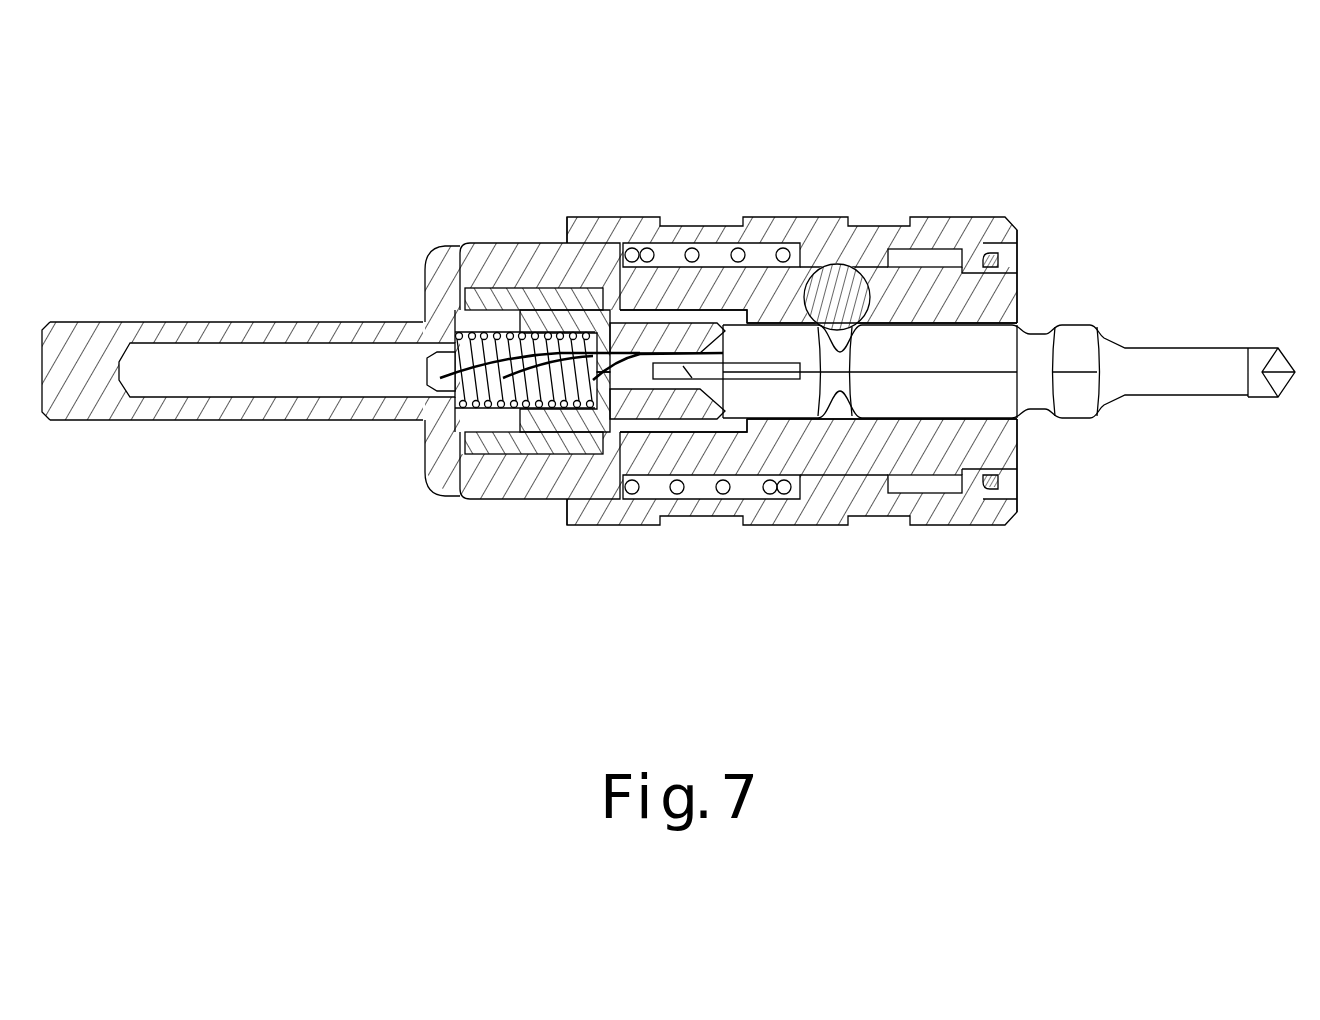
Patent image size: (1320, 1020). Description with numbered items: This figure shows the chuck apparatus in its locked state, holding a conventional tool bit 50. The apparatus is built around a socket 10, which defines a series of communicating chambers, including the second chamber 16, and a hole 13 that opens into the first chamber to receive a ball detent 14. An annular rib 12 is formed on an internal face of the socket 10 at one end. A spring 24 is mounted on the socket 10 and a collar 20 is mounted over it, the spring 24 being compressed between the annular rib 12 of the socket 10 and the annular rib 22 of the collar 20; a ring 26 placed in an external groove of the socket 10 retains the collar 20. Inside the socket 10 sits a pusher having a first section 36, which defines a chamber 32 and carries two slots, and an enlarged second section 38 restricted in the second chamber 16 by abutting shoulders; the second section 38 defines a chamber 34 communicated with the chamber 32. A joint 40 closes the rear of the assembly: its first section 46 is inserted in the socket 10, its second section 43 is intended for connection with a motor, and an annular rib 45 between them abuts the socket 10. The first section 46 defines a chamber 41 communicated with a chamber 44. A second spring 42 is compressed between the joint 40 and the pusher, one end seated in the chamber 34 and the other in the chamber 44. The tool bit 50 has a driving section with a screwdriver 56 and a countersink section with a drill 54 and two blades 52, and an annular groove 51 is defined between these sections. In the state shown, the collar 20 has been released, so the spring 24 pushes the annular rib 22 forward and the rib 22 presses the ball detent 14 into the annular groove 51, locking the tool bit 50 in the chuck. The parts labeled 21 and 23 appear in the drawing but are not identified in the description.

The socket 10 is at (1042, 250).
The annular rib 12 is at (526, 264).
The hole 13 is at (870, 312).
The ball detent 14 is at (815, 273).
The second chamber 16 is at (698, 425).
The collar 20 is at (682, 184).
The retaining ring 21 is at (978, 260).
The annular rib 22 is at (850, 258).
The ring 23 is at (942, 256).
The spring 24 is at (632, 247).
The ring 26 is at (990, 480).
The chamber 32 is at (647, 393).
The chamber 34 is at (567, 420).
The first section 36 is at (672, 333).
The enlarged second section 38 is at (557, 318).
The joint 40 is at (253, 232).
The chamber 41 is at (497, 410).
The spring 42 is at (452, 405).
The second section 43 is at (88, 403).
The chamber 44 is at (218, 375).
The annular rib 45 is at (443, 272).
The first section 46 is at (513, 290).
The tool bit 50 is at (1106, 456).
The annular groove 51 is at (836, 420).
The blades 52 is at (767, 380).
The drill 54 is at (637, 372).
The screwdriver 56 is at (1203, 377).